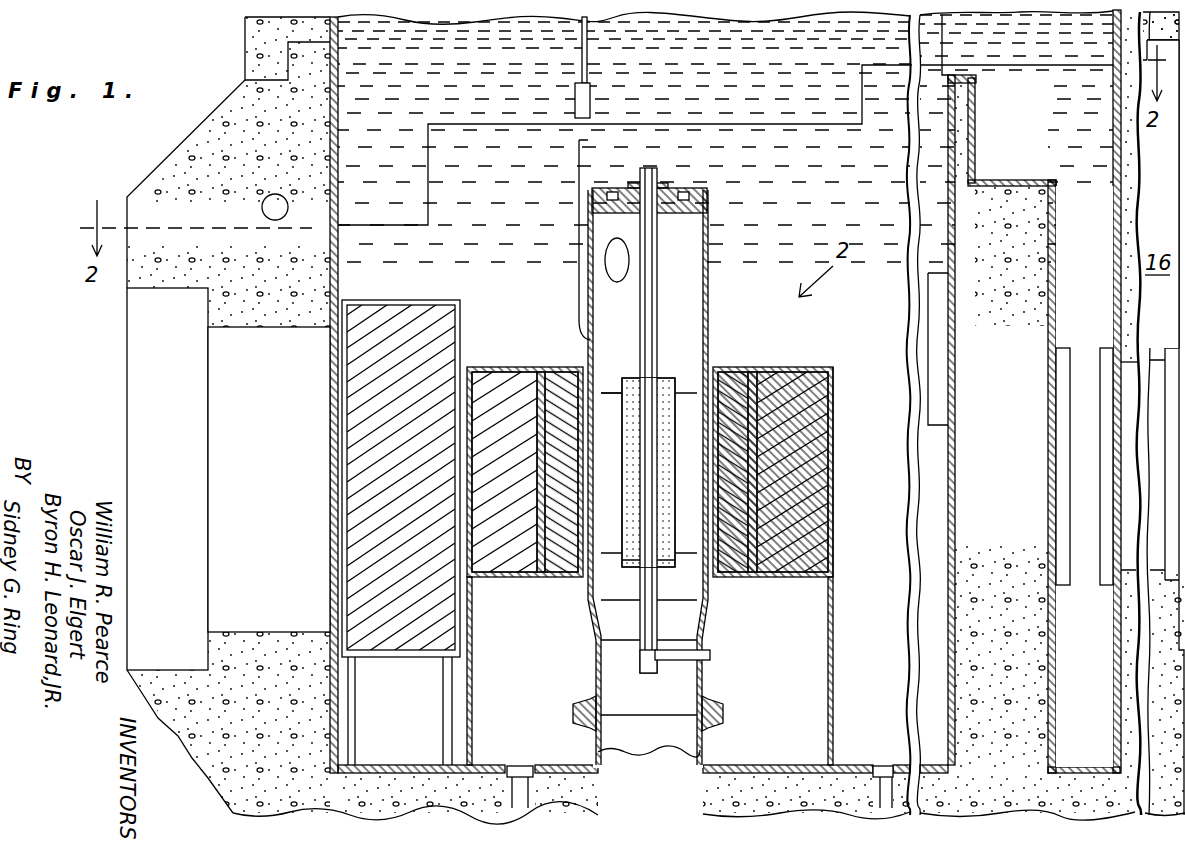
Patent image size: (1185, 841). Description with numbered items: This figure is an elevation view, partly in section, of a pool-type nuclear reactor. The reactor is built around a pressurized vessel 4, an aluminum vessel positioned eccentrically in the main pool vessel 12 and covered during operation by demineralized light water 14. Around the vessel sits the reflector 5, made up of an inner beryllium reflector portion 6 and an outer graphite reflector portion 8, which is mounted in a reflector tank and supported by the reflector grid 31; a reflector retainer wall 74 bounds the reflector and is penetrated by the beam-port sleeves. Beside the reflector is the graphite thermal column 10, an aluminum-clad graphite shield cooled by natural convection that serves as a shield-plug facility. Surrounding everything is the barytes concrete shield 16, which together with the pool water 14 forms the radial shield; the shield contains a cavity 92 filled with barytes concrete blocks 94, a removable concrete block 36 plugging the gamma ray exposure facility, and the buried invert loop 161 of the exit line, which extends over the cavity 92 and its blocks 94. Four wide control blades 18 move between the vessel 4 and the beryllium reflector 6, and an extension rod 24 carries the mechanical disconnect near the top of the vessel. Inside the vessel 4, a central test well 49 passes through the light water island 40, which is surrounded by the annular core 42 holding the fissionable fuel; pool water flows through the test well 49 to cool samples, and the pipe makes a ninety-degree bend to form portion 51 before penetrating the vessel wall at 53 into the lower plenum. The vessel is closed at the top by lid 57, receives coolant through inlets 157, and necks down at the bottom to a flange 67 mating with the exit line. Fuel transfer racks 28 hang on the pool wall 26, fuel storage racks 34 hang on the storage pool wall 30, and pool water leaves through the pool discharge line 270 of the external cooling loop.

The pressurized vessel 4 is at (708, 330).
The reflector 5 is at (800, 360).
The inner beryllium reflector portion 6 is at (562, 382).
The outer graphite reflector portion 8 is at (498, 384).
The graphite thermal shield (thermal column) 10 is at (440, 304).
The main pool vessel 12 is at (330, 156).
The demineralized light water 14 is at (748, 84).
The barytes concrete shield 16 is at (172, 172).
The wide blades (control rods) 18 is at (578, 242).
The extension rod 24 is at (575, 103).
The pool wall 26 is at (944, 481).
The atomic fuel transfer racks 28 is at (940, 398).
The wall of storage pool 30 is at (1048, 322).
The reflector grid 31 is at (532, 580).
The atomic fuel storage racks 34 is at (1104, 350).
The removable concrete block 36 is at (1153, 368).
The light water island 40 is at (664, 382).
The annular core 42 is at (622, 430).
The test well 49 is at (652, 178).
The bent portion of test well 51 is at (700, 644).
The vessel wall penetration 53 is at (708, 662).
The closure or lid 57 is at (694, 192).
The flange 67 is at (580, 706).
The reflector retainer wall 74 is at (833, 476).
The cavity 92 is at (268, 330).
The barytes concrete blocks 94 is at (292, 617).
The inlets 157 is at (626, 272).
The invert loop 161 is at (292, 204).
The pool discharge line 270 is at (516, 797).